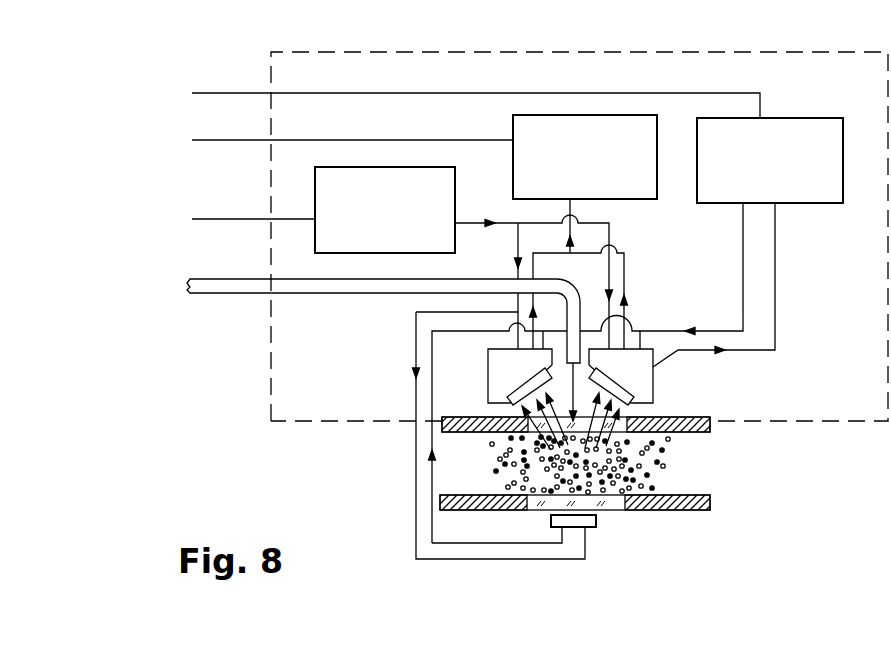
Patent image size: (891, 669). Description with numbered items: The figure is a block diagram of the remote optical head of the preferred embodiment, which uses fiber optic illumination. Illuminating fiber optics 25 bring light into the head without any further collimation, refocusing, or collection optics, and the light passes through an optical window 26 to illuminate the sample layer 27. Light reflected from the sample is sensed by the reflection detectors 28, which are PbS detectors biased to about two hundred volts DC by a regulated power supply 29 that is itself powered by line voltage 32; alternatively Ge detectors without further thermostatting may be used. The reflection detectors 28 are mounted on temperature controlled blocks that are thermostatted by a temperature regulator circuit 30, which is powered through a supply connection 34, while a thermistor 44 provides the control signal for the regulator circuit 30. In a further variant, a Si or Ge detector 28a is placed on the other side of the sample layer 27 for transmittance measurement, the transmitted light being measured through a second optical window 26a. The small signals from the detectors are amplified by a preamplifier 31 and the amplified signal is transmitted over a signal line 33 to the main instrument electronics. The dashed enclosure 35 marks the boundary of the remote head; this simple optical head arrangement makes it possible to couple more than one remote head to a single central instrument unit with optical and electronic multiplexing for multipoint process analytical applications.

The illuminating fiber optics 25 is at (230, 297).
The optical window 26 is at (613, 427).
The optical window 26a is at (613, 505).
The sample layer 27 is at (593, 467).
The reflection detectors 28 is at (632, 397).
The Si or Ge detector 28a is at (590, 533).
The regulated power supply 29 is at (335, 190).
The temperature regulator circuit 30 is at (793, 133).
The preamplifier 31 is at (537, 140).
The line voltage 32 is at (227, 217).
The signal line 33 is at (212, 137).
The supply connection 34 is at (230, 88).
The enclosure 35 is at (343, 420).
The thermistor 44 is at (642, 378).